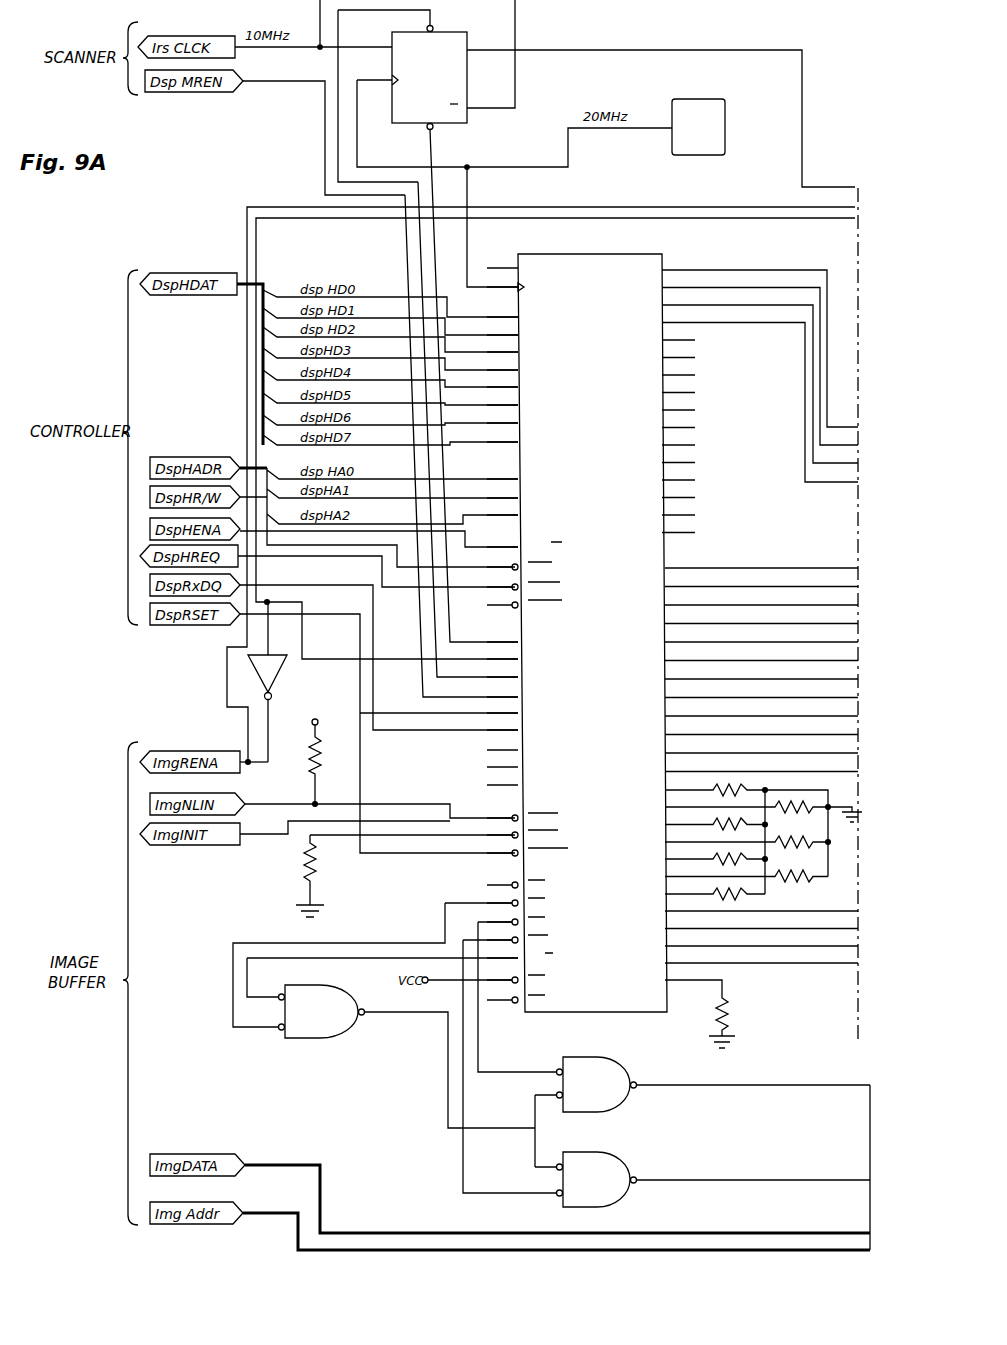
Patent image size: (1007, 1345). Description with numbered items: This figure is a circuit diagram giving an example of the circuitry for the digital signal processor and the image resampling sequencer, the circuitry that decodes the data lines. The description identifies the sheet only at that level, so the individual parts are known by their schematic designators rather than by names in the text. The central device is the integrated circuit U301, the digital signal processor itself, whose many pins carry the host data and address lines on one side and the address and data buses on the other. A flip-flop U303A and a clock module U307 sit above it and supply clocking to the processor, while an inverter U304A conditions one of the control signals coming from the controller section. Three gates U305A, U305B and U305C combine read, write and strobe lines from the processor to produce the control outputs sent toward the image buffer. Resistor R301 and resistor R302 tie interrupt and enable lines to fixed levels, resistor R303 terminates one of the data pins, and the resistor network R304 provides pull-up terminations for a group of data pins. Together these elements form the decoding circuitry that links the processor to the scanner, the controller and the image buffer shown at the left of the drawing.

The DSP56000 digital signal processor U301 is at (591, 635).
The 74HC74 D flip-flop U303A is at (450, 74).
The 74HC04 inverter U304A is at (289, 682).
The 74HC32 OR gate U305A is at (318, 1010).
The 74HC32 OR gate U305B is at (595, 1084).
The 74HC32 OR gate U305C is at (593, 1179).
The IQ5XO-350 20 MHz clock oscillator U307 is at (693, 127).
The 47k pull-up resistor R301 is at (307, 760).
The 47k pull-down resistor R302 is at (326, 876).
The 47k resistor R303 is at (732, 1014).
The 7x47k resistor network R304 is at (783, 842).